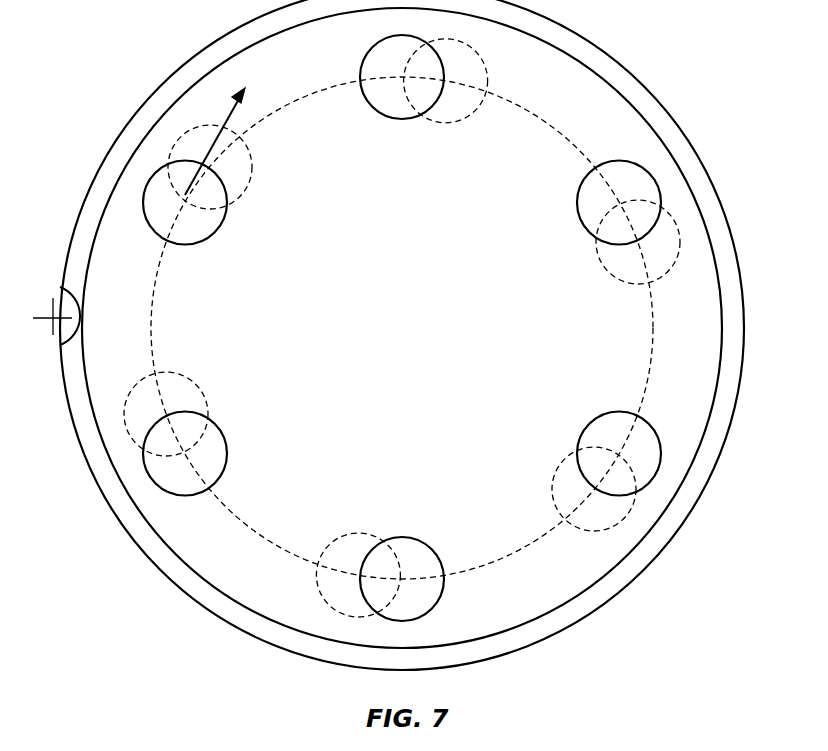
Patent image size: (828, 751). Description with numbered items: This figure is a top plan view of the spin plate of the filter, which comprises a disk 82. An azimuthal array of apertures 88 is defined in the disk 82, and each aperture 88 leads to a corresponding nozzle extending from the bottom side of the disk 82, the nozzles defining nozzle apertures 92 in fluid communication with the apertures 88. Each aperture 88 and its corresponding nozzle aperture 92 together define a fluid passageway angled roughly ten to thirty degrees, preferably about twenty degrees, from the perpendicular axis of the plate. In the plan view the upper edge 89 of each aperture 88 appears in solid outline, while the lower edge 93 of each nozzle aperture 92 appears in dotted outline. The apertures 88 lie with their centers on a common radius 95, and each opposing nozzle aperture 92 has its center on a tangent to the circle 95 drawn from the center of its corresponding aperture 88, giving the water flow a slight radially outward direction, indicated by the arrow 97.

The disk 82 is at (596, 123).
The apertures 88 is at (397, 117).
The upper edge 89 is at (148, 175).
The nozzle apertures 92 is at (476, 54).
The lower edge 93 is at (187, 127).
The common radius 95 is at (323, 87).
The rotation direction arrow 97 is at (230, 103).